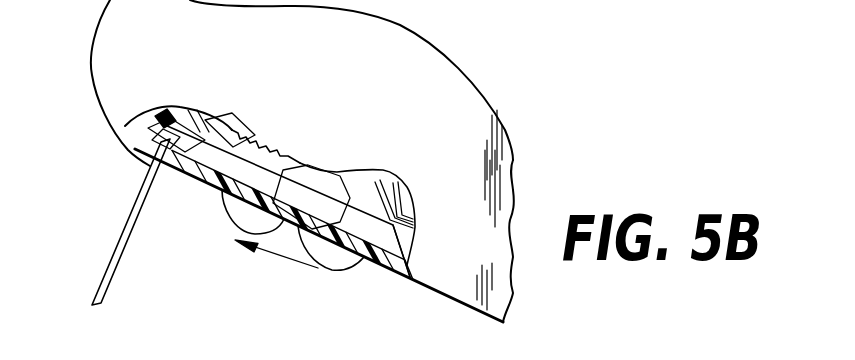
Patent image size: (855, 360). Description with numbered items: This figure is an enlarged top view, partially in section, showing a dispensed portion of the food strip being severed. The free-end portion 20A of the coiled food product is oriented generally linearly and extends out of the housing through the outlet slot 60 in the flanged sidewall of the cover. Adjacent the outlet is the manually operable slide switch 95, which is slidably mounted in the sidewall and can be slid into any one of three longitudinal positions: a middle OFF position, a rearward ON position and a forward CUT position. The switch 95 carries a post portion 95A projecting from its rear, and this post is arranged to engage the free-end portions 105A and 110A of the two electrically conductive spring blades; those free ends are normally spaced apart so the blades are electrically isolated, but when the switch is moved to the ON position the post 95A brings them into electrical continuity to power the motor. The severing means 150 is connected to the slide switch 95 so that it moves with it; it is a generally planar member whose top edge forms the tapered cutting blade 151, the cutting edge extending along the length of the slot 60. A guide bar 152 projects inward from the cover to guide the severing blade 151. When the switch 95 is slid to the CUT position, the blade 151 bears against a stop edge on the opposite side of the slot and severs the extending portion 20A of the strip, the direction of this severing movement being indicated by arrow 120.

The free-end portion of the food product 20A is at (100, 303).
The outlet slot 60 is at (143, 158).
The slide switch 95 is at (345, 267).
The post portion 95A is at (312, 177).
The free-end portion of spring blade 105A is at (390, 178).
The free-end portion of spring blade 110A is at (403, 192).
The direction of movement 120 is at (279, 263).
The severing means 150 is at (232, 128).
The cutting blade 151 is at (192, 118).
The guide bar 152 is at (158, 118).